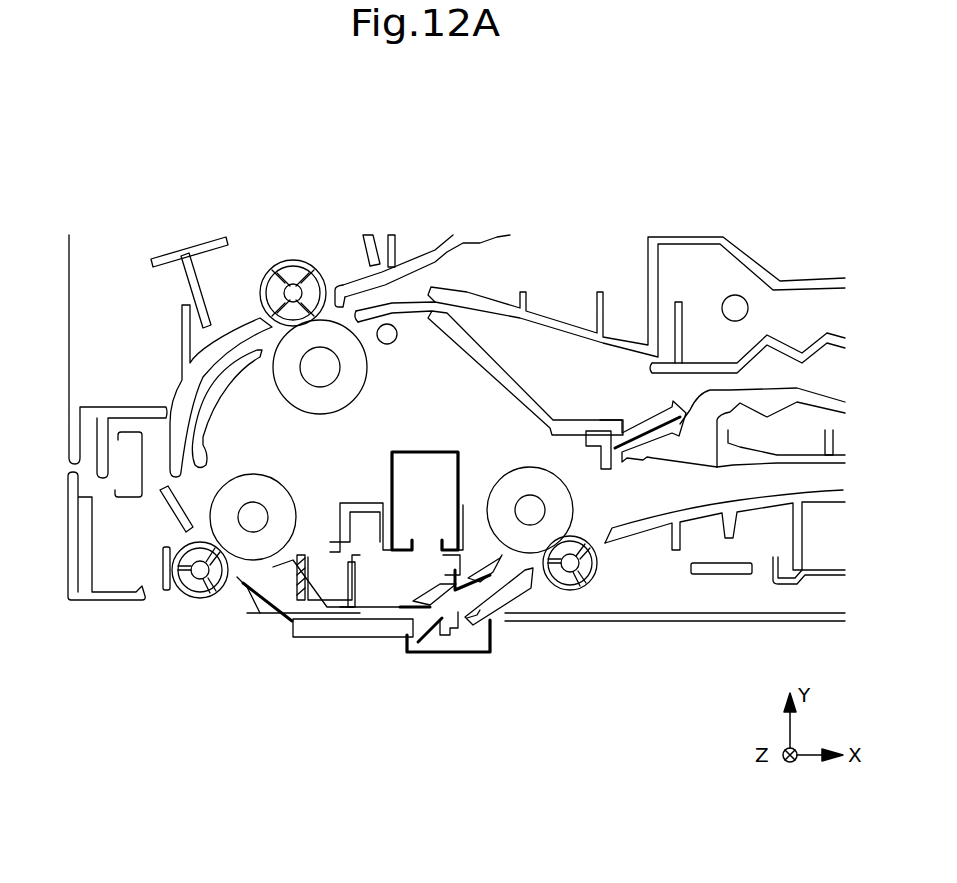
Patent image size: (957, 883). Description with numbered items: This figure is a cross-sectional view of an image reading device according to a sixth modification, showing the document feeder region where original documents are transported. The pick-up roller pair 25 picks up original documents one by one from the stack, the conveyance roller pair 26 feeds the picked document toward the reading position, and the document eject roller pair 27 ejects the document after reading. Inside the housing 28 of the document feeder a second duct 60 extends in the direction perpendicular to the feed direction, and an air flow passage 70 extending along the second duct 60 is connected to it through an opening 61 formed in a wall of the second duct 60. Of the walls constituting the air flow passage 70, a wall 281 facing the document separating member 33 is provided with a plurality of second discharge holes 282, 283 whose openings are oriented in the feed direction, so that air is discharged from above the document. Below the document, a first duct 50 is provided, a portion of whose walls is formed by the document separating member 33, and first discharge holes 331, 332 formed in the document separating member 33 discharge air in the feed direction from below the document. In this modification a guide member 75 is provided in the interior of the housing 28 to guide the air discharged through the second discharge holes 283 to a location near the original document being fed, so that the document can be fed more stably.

The pick-up roller pair 25 is at (337, 325).
The conveyance roller pair 26 is at (247, 560).
The document eject roller pair 27 is at (592, 590).
The housing 28 is at (90, 600).
The document separating member 33 is at (455, 628).
The first duct 50 is at (485, 652).
The second duct 60 is at (413, 540).
The opening 61 is at (413, 548).
The air flow passage 70 is at (350, 600).
The guide member 75 is at (480, 572).
The wall 281 is at (405, 624).
The second discharge holes 282 is at (412, 552).
The second discharge holes 283 is at (457, 573).
The first discharge holes 331 is at (438, 617).
The first discharge holes 332 is at (468, 620).